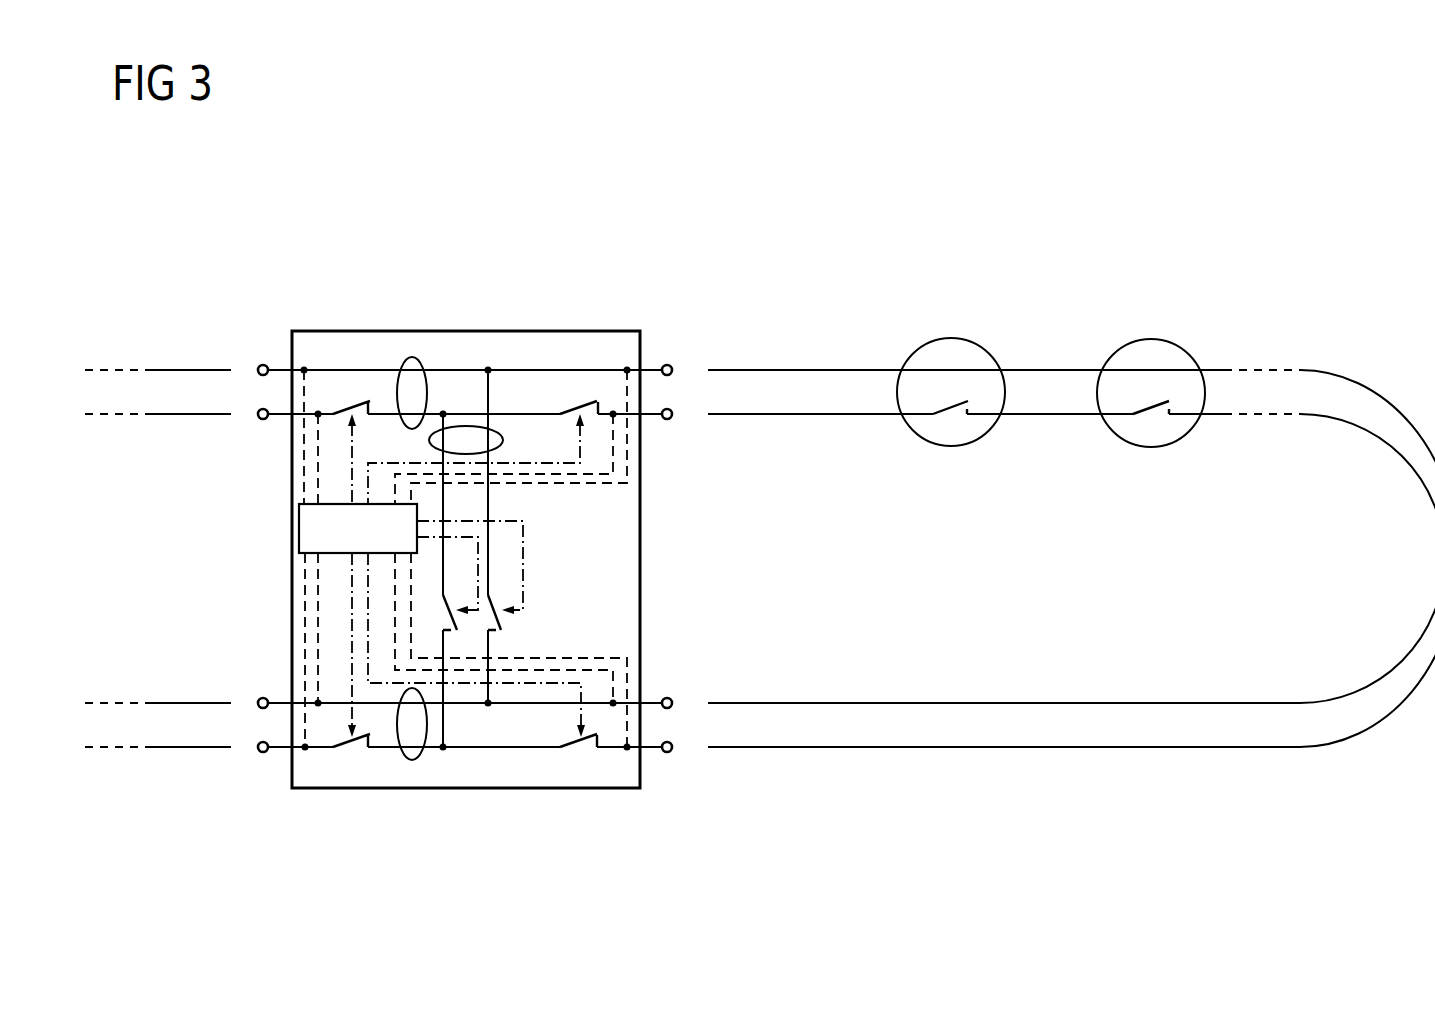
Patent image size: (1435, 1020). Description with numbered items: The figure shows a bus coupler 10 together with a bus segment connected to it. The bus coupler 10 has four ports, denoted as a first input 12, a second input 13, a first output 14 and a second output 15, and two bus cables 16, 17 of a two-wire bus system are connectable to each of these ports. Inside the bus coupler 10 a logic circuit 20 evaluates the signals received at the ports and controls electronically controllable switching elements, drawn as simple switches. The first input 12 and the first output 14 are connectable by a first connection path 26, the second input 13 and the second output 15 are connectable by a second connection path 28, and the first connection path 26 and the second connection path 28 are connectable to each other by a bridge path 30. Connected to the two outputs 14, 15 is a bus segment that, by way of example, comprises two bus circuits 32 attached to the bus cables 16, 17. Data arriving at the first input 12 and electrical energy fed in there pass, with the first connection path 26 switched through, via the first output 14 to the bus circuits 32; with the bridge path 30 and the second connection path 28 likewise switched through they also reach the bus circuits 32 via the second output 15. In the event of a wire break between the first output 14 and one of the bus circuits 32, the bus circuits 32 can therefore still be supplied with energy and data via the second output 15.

The bus coupler 10 is at (585, 251).
The first input 12 is at (240, 369).
The second input 13 is at (243, 750).
The first output 14 is at (687, 371).
The second output 15 is at (690, 750).
The bus cable 16 is at (178, 369).
The bus cable 17 is at (181, 416).
The logic circuit 20 is at (299, 525).
The first connection path 26 is at (409, 357).
The second connection path 28 is at (412, 760).
The bridge path 30 is at (503, 440).
The bus circuit 32 is at (951, 338).